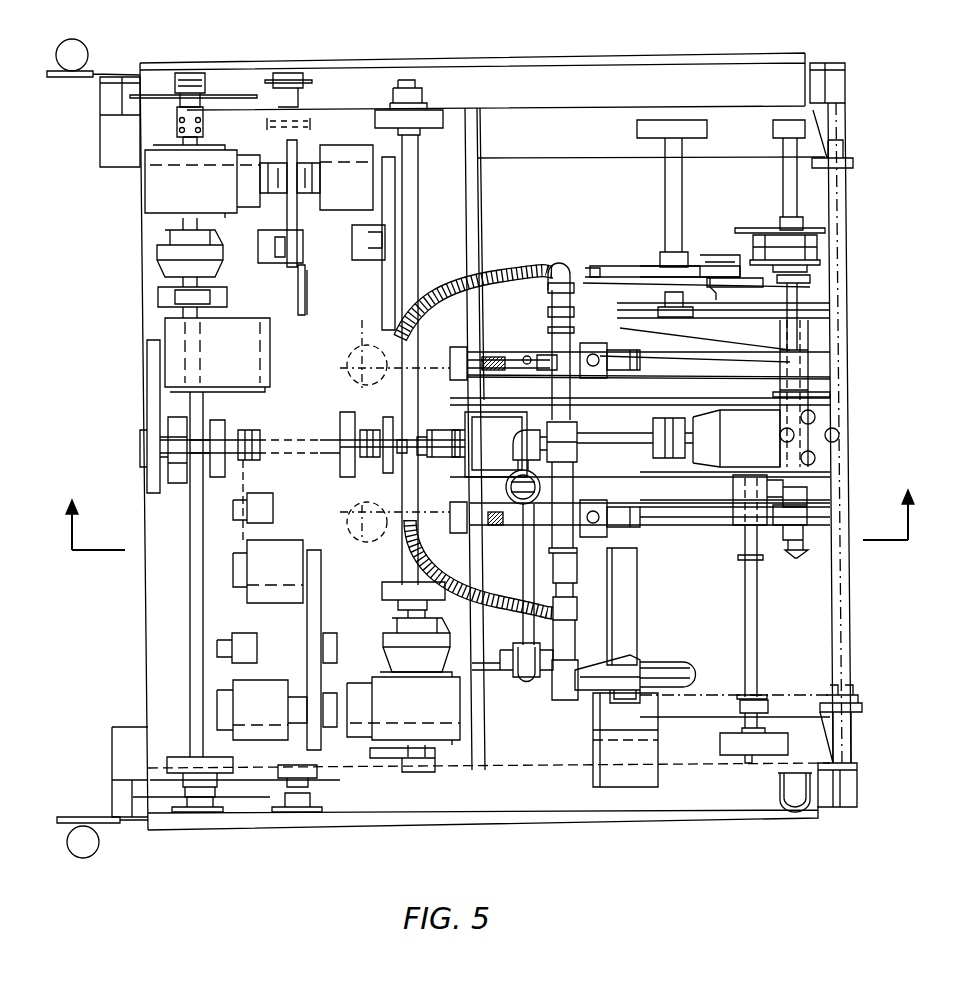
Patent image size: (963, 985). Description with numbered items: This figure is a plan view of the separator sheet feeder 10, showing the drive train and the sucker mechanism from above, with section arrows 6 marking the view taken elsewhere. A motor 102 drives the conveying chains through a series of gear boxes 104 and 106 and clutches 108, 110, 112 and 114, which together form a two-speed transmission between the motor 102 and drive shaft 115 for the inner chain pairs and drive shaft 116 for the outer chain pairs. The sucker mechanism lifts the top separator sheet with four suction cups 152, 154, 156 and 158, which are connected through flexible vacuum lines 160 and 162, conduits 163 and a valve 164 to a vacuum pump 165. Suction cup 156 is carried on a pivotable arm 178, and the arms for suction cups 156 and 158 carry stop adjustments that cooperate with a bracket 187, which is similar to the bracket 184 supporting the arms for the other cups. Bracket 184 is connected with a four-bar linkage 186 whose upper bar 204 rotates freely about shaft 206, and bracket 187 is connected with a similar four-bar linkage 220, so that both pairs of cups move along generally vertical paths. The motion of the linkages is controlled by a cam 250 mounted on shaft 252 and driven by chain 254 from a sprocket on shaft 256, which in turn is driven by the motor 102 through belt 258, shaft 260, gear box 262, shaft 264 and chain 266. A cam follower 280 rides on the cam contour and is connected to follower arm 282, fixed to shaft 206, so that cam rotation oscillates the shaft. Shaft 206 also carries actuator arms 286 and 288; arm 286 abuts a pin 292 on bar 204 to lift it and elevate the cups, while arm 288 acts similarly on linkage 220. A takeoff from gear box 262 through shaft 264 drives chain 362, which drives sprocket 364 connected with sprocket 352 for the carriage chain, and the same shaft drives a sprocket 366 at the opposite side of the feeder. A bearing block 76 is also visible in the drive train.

The separator sheet feeder 10 is at (624, 36).
The bearing block 76 is at (435, 370).
The motor 102 is at (165, 338).
The gear box 104 is at (165, 192).
The gear box 106 is at (447, 727).
The clutch 108 is at (350, 150).
The clutch 110 is at (318, 317).
The clutch 112 is at (287, 547).
The clutch 114 is at (273, 697).
The drive shaft 115 is at (197, 653).
The drive shaft 116 is at (407, 220).
The suction cup 152 is at (570, 660).
The suction cup 154 is at (360, 536).
The suction cup 156 is at (576, 340).
The suction cup 158 is at (365, 350).
The flexible vacuum line 160 is at (460, 592).
The flexible vacuum line 162 is at (423, 303).
The conduit 163 is at (573, 417).
The valve 164 is at (502, 490).
The vacuum pump 165 is at (680, 670).
The arm 178 is at (547, 380).
The bracket 184 is at (487, 533).
The four-bar linkage 186 is at (645, 507).
The bracket 187 is at (480, 340).
The upper bar 204 is at (635, 610).
The shaft 206 is at (800, 303).
The four-bar linkage 220 is at (652, 380).
The cam 250 is at (593, 277).
The shaft 252 is at (673, 198).
The chain 254 is at (737, 263).
The shaft 256 is at (792, 203).
The belt 258 is at (150, 398).
The shaft 260 is at (287, 447).
The gear box 262 is at (733, 490).
The shaft 264 is at (755, 640).
The chain 266 is at (770, 560).
The cam follower 280 is at (665, 265).
The follower arm 282 is at (713, 293).
The actuator arm 286 is at (657, 333).
The actuator arm 288 is at (610, 520).
The pin 292 is at (642, 525).
The sprocket 352 is at (860, 707).
The chain 362 is at (797, 690).
The sprocket 364 is at (858, 697).
The sprocket 366 is at (845, 163).
The section line 6 is at (489, 508).